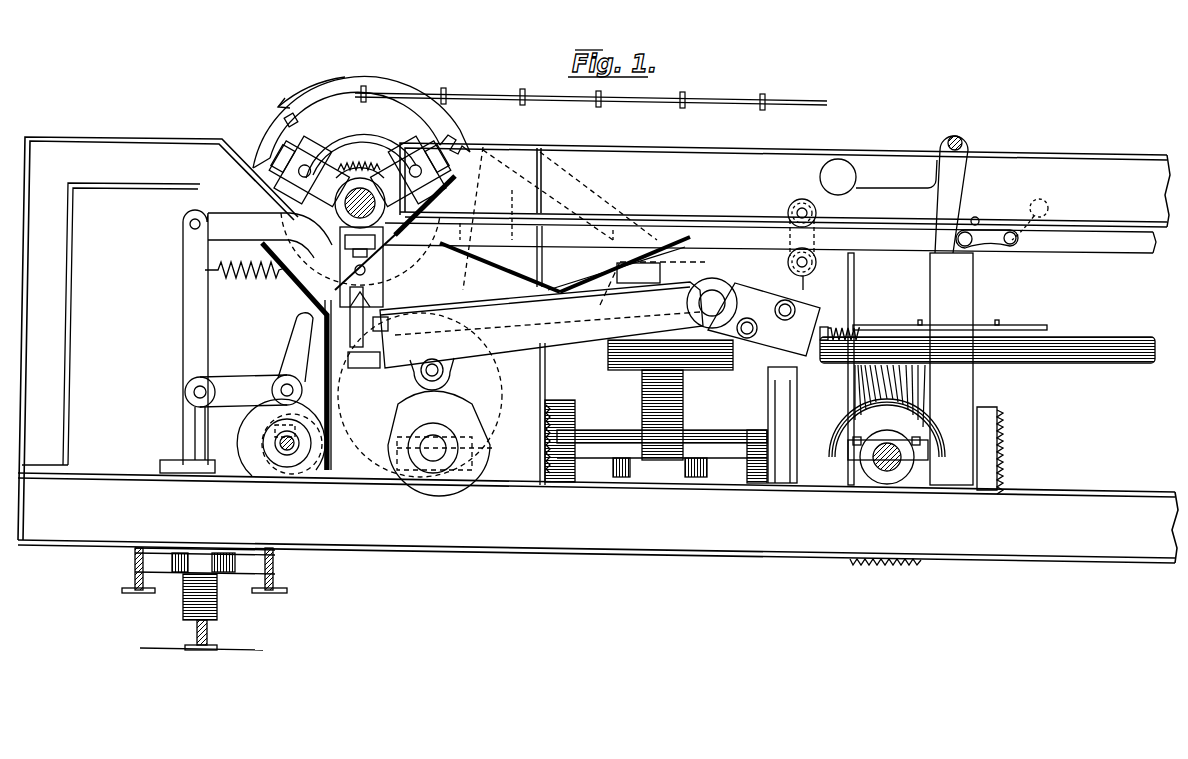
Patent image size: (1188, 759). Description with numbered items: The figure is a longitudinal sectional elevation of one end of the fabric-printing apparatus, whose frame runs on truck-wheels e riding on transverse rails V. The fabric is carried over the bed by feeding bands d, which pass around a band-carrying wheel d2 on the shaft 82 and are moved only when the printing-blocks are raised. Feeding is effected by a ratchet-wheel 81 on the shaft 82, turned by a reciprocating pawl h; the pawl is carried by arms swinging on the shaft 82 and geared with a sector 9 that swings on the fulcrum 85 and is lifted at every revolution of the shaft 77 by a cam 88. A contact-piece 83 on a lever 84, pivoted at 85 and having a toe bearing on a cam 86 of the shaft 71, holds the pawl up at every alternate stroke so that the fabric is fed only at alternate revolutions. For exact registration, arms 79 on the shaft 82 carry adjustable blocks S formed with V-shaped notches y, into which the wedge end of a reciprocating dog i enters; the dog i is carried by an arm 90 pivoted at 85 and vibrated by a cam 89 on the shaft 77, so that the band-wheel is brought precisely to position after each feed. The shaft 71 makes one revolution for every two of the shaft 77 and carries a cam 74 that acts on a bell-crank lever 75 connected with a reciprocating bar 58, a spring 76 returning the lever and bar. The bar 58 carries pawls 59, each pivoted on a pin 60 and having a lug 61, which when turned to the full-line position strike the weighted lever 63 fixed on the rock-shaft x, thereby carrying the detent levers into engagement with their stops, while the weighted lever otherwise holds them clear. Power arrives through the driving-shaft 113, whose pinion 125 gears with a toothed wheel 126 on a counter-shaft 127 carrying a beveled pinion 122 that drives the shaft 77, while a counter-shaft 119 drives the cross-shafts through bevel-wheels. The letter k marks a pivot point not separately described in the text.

The sector 9 is at (405, 120).
The reciprocating bar 58 is at (770, 239).
The pawl 59 is at (1000, 225).
The pin 60 is at (1010, 250).
The lug 61 is at (977, 217).
The weighted lever 63 is at (905, 182).
The shaft 71 is at (283, 448).
The cam 74 is at (315, 473).
The bell-crank lever 75 is at (192, 327).
The spring 76 is at (245, 283).
The shaft 77 is at (433, 440).
The arm 79 is at (436, 186).
The ratchet-wheel 81 is at (366, 148).
The shaft 82 is at (391, 242).
The contact-piece 83 is at (380, 152).
The lever 84 is at (288, 322).
The pivot 85 is at (715, 300).
The cam 86 is at (263, 410).
The cam 88 is at (483, 377).
The cam 89 is at (487, 143).
The arm 90 is at (542, 297).
The driving-shaft 113 is at (1080, 364).
The counter-shaft 119 is at (757, 435).
The beveled pinion 122 is at (552, 410).
The pinion 125 is at (680, 364).
The toothed wheel 126 is at (645, 416).
The counter-shaft 127 is at (560, 478).
The band d is at (715, 100).
The band-carrying wheel d2 is at (326, 100).
The truck-wheel e is at (217, 598).
The pawl h is at (275, 188).
The dog i is at (350, 330).
The pivot k is at (296, 375).
The block S is at (303, 158).
The transverse rail V is at (195, 635).
The rock-shaft x is at (970, 142).
The V-shaped notch y is at (280, 145).